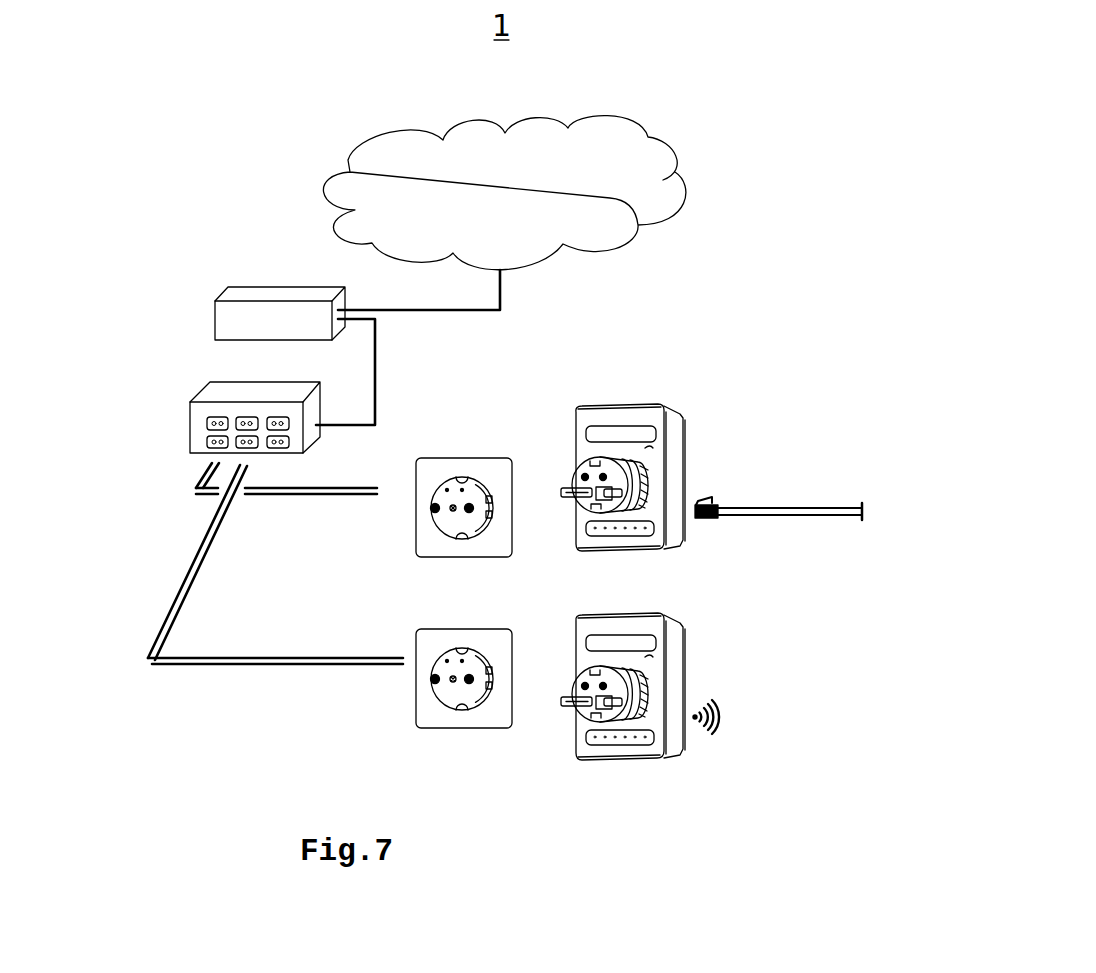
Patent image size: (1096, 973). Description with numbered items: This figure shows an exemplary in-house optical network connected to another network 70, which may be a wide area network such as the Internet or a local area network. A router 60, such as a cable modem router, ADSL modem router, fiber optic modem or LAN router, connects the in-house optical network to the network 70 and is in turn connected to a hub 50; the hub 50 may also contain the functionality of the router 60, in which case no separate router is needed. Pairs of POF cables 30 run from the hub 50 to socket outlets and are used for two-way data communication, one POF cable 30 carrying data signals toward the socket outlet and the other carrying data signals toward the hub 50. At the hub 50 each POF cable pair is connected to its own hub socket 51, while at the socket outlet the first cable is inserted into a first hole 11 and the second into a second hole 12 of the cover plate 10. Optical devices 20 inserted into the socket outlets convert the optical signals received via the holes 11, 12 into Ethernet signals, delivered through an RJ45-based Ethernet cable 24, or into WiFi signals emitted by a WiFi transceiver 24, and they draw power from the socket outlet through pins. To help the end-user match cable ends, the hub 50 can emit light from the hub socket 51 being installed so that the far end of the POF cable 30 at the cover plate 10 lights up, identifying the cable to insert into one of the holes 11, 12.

The cover plate 10 is at (457, 571).
The first hole 11 is at (437, 550).
The second hole 12 is at (487, 634).
The optical device 20 is at (629, 560).
The Ethernet cable / WiFi transceiver 24 is at (778, 591).
The POF cable 30 is at (275, 575).
The hub 50 is at (221, 399).
The hub socket 51 is at (208, 393).
The router 60 is at (250, 291).
The network 70 is at (656, 160).